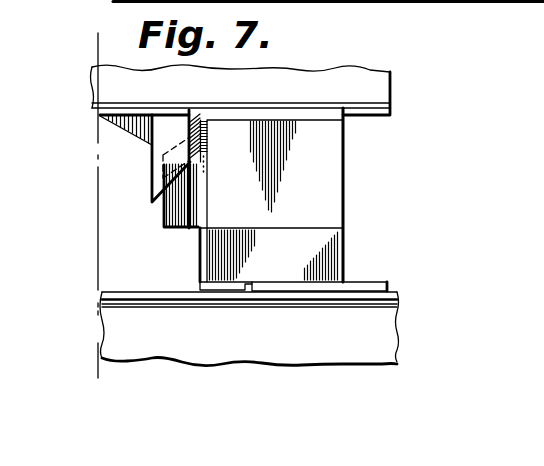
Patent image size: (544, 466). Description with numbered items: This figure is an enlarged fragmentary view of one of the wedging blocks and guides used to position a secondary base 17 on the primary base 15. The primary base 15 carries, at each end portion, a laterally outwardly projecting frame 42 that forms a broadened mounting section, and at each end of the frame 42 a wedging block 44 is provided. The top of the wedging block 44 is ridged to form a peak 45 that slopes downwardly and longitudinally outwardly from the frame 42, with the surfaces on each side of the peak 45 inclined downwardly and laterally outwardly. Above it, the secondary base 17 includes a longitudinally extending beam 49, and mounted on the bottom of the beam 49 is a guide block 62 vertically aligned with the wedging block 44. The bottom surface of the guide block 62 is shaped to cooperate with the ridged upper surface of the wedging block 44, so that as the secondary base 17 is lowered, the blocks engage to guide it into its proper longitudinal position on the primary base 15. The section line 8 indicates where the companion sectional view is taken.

The section line 8 is at (118, 50).
The secondary base 17 is at (331, 64).
The second longitudinally extending beam 49 is at (365, 90).
The guide block 62 is at (168, 128).
The peak 45 is at (211, 144).
The wedging block 44 is at (190, 197).
The laterally outwardly projecting frame 42 is at (362, 277).
The primary base 15 is at (409, 317).